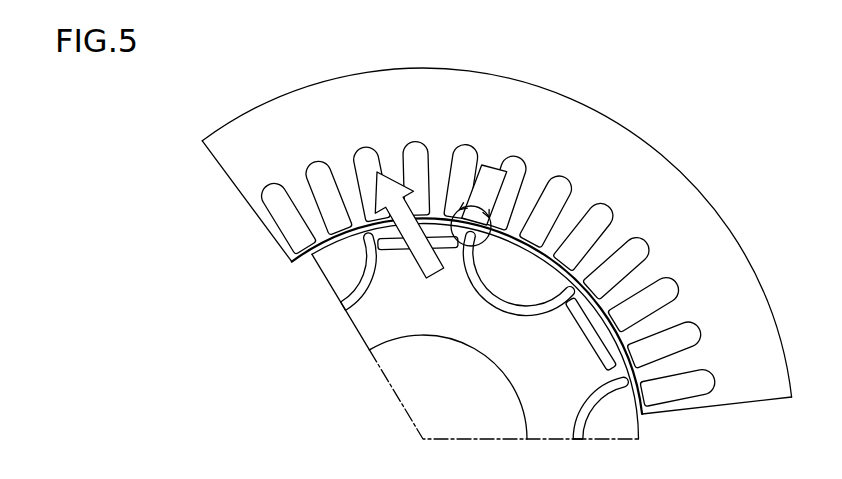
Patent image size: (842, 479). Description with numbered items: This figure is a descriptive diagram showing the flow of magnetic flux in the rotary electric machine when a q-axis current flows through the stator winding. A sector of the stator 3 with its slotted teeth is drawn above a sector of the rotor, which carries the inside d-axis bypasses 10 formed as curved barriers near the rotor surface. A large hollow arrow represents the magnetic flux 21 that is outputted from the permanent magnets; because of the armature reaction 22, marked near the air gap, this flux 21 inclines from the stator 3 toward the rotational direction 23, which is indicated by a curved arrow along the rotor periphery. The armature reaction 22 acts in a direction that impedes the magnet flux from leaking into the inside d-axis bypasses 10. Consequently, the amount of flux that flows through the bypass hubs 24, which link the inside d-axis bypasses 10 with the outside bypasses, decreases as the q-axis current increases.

The stator 3 is at (665, 191).
The inside d-axis bypass 10 is at (493, 287).
The magnetic flux 21 is at (377, 172).
The armature reaction 22 is at (493, 163).
The rotational direction 23 is at (311, 272).
The bypass hub 24 is at (440, 222).